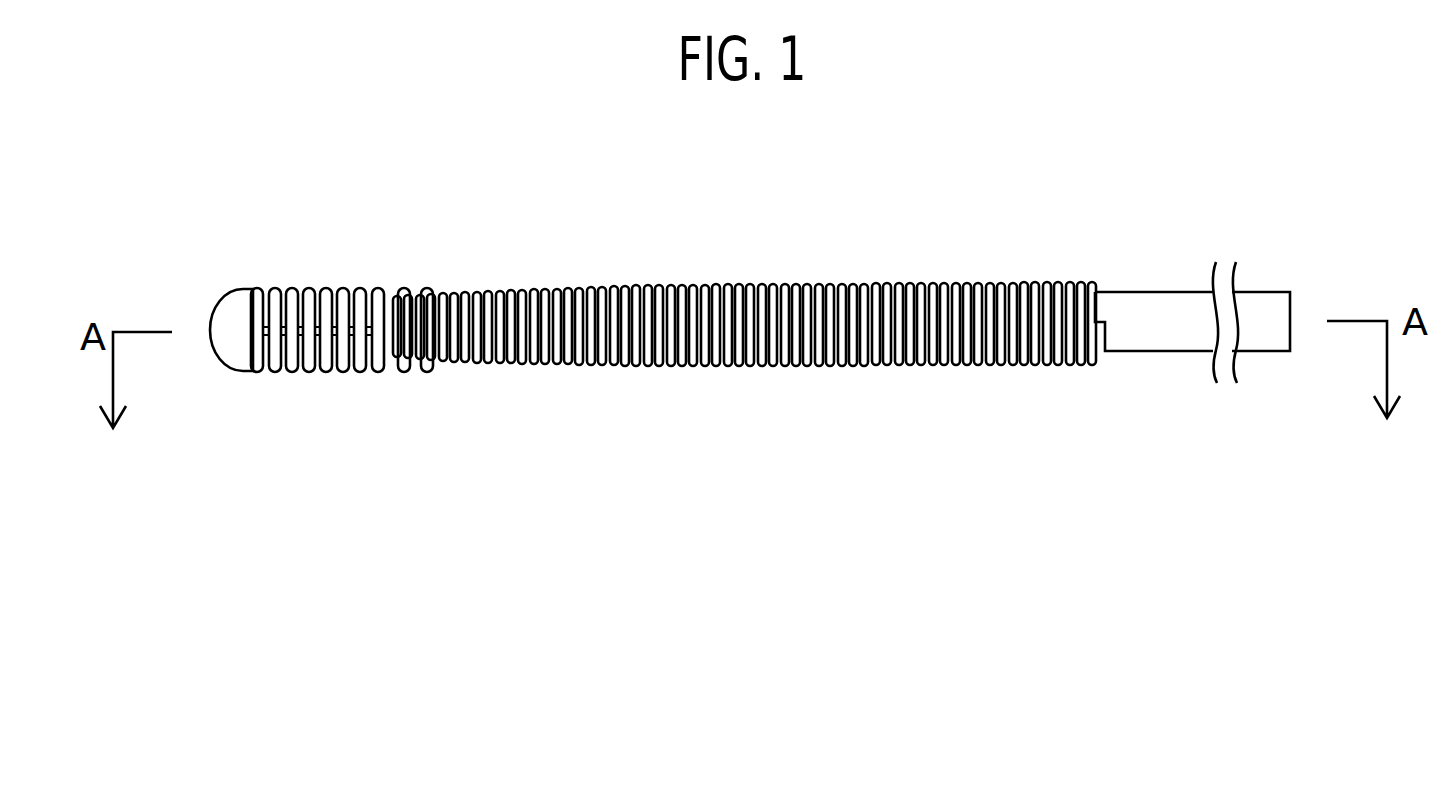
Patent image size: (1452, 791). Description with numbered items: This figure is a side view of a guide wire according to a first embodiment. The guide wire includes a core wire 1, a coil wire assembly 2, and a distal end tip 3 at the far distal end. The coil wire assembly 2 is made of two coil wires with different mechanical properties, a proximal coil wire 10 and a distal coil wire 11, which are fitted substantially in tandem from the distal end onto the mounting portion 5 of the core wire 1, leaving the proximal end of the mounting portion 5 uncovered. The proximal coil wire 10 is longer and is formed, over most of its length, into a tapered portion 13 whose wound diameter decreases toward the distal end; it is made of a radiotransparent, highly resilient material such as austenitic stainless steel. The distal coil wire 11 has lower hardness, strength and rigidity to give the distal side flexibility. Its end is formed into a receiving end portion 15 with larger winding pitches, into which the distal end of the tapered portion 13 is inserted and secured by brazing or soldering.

The core wire 1 is at (1165, 258).
The coil wire assembly 2 is at (648, 258).
The distal end tip 3 is at (241, 292).
The mounting portion 5 is at (1107, 307).
The proximal coil wire 10 is at (824, 257).
The distal coil wire 11 is at (317, 258).
The tapered portion 13 is at (524, 298).
The receiving end portion 15 is at (407, 292).